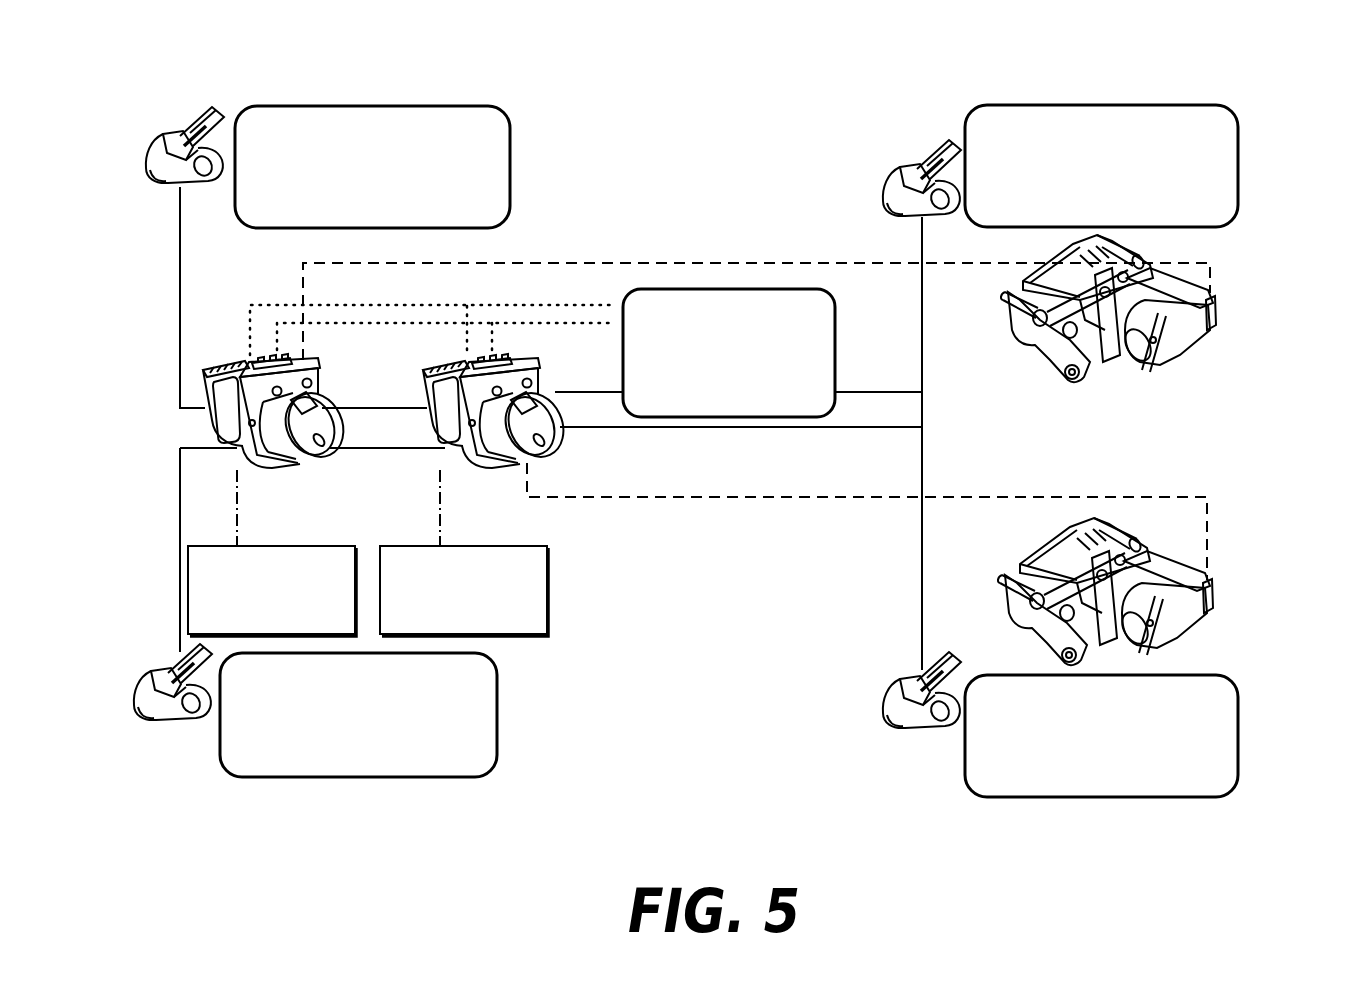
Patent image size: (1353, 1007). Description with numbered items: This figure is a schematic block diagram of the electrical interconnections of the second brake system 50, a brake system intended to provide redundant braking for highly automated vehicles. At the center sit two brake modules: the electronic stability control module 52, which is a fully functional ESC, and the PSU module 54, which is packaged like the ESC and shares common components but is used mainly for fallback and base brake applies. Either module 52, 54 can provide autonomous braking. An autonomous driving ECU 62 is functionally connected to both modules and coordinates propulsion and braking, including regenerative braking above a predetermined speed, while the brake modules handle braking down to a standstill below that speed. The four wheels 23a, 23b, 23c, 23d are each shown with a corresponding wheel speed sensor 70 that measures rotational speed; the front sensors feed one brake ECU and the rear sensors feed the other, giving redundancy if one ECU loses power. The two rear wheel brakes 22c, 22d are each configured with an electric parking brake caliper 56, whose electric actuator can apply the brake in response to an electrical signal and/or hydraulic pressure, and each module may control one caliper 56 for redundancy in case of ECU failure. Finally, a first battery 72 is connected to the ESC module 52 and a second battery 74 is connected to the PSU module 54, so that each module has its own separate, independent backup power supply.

The second brake system 50 is at (168, 90).
The wheel speed sensor 70 is at (162, 140).
The wheel 23a is at (499, 733).
The wheel 23b is at (512, 162).
The wheel 23c is at (1240, 730).
The wheel 23d is at (1240, 160).
The autonomous driving electronic control unit 62 is at (700, 289).
The electronic stability control module 52 is at (545, 372).
The PSU module 54 is at (322, 370).
The first battery 72 is at (463, 546).
The second battery 74 is at (297, 546).
The rear wheel brake 22c is at (1152, 566).
The rear wheel brake 22d is at (1162, 289).
The electric parking brake caliper 56 is at (1158, 450).